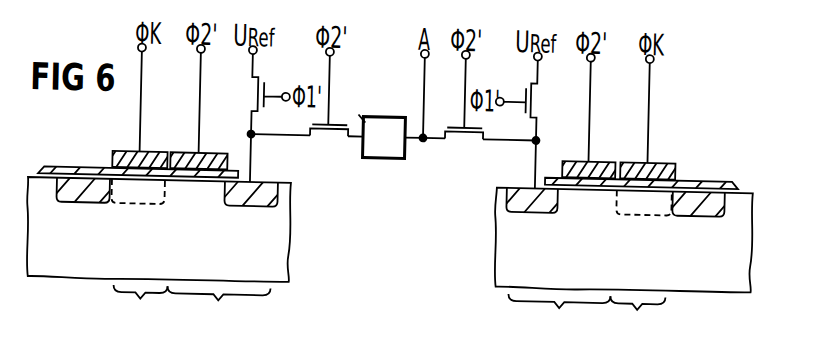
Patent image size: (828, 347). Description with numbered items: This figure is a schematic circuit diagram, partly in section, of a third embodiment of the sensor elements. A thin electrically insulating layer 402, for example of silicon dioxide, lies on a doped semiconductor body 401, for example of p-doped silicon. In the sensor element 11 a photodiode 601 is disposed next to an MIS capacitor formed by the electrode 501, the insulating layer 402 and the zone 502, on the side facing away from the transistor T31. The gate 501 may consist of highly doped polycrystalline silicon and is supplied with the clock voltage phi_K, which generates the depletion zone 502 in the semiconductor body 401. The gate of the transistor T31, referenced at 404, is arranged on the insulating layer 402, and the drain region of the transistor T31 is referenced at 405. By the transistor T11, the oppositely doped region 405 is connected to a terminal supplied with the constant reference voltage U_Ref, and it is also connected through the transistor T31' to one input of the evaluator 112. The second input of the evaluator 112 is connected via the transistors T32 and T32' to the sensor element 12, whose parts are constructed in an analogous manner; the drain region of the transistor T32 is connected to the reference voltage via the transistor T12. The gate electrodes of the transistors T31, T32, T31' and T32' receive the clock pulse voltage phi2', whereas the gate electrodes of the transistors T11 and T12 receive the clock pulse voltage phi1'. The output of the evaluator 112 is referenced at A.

The semiconductor body 401 is at (513, 228).
The insulating layer 402 is at (710, 170).
The gate of transistor T31 404 is at (580, 151).
The drain region 405 is at (540, 199).
The gate electrode 501 is at (639, 150).
The depletion zone 502 is at (647, 211).
The photodiode 601 is at (703, 195).
The sensor element 11 is at (139, 311).
The sensor element 12 is at (637, 321).
The evaluator 112 is at (372, 124).
The transistor T11 is at (251, 117).
The transistor T12 is at (536, 124).
The transistor T31 is at (218, 312).
The transistor T32 is at (558, 320).
The transistor T31' is at (328, 149).
The transistor T32' is at (463, 152).